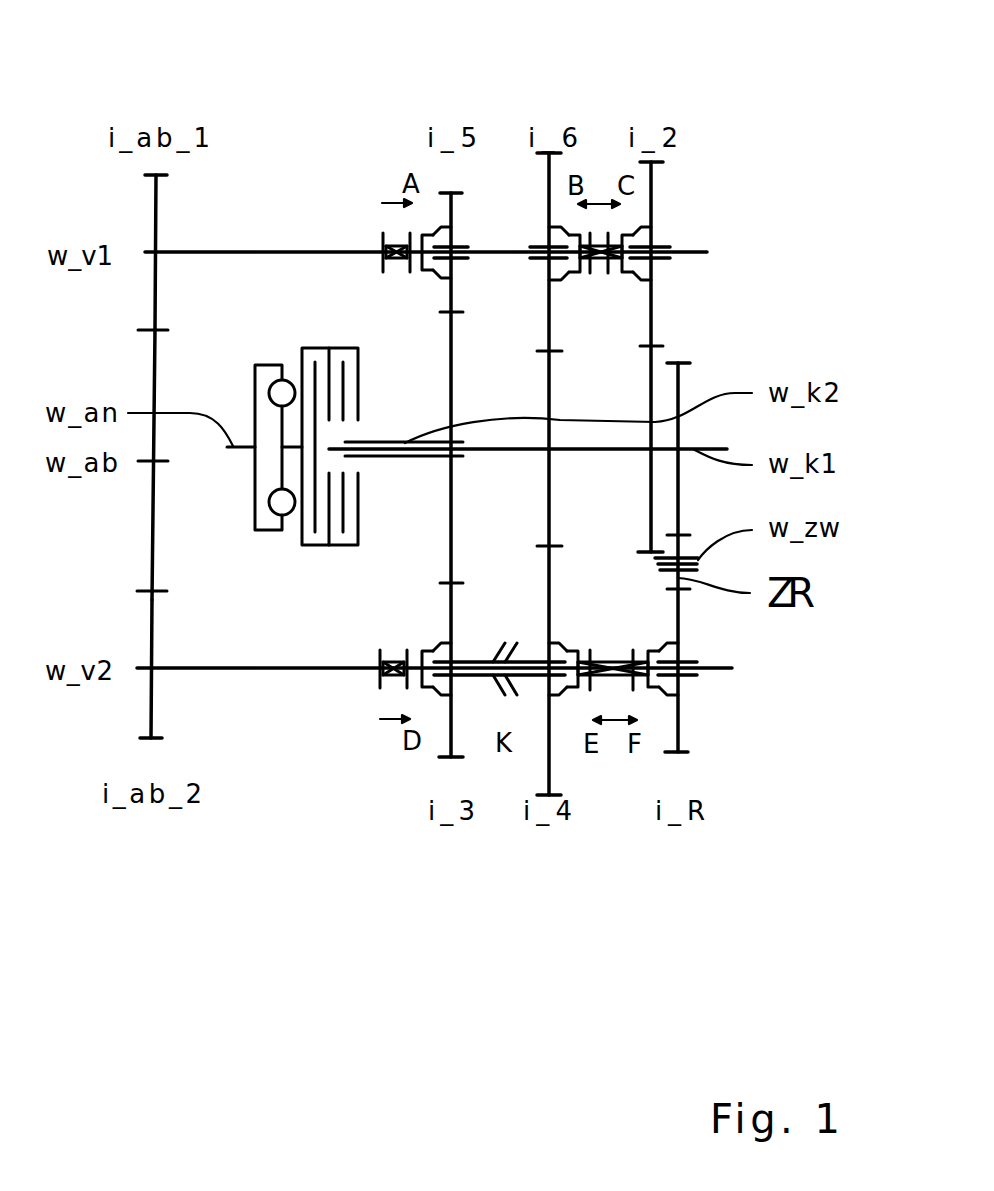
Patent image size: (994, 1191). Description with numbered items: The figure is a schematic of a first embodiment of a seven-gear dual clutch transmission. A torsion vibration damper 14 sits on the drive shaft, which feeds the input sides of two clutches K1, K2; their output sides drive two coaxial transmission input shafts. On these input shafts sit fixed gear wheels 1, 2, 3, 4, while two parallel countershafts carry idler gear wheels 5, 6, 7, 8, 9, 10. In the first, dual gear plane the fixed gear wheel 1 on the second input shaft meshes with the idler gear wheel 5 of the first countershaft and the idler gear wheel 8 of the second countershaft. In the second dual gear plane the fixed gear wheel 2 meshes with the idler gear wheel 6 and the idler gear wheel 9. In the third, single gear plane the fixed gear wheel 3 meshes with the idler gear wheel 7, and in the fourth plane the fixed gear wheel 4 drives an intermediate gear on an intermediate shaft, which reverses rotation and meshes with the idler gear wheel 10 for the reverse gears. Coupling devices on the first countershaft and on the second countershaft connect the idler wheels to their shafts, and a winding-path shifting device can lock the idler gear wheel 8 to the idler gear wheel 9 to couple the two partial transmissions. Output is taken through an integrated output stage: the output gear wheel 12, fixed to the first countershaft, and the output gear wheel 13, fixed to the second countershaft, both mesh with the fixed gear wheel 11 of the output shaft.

The fixed gear wheel 1 is at (447, 522).
The fixed gear wheel 2 is at (547, 377).
The fixed gear wheel 3 is at (652, 358).
The fixed gear wheel 4 is at (678, 385).
The idler gear wheel 5 is at (442, 193).
The idler gear wheel 6 is at (547, 192).
The idler gear wheel 7 is at (652, 207).
The idler gear wheel 8 is at (451, 616).
The idler gear wheel 9 is at (548, 743).
The idler gear wheel 10 is at (677, 722).
The fixed gear wheel of the output shaft 11 is at (156, 362).
The output gear wheel 12 is at (153, 200).
The output gear wheel 13 is at (151, 712).
The torsion vibration damper 14 is at (257, 530).
The first clutch K1 is at (312, 348).
The second clutch K2 is at (338, 348).